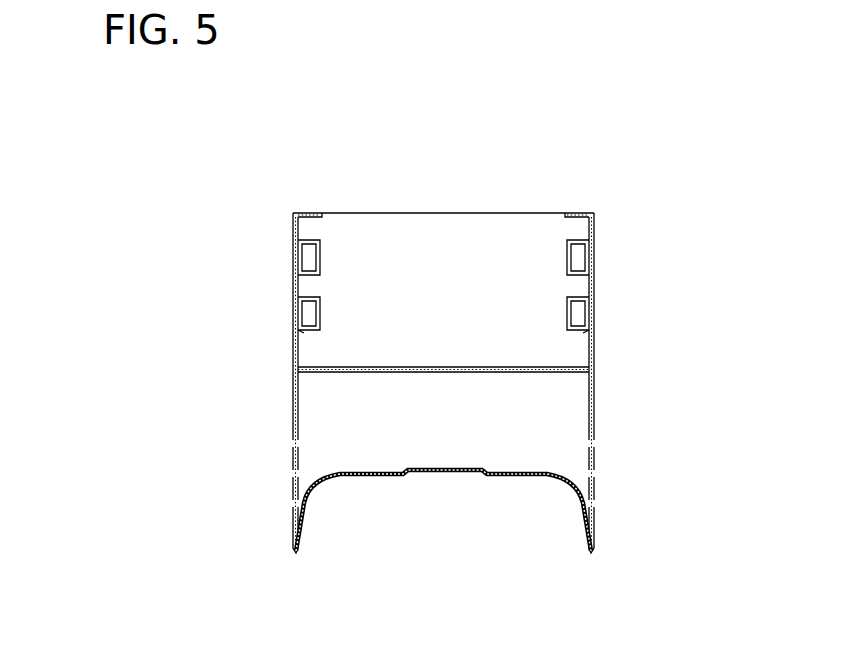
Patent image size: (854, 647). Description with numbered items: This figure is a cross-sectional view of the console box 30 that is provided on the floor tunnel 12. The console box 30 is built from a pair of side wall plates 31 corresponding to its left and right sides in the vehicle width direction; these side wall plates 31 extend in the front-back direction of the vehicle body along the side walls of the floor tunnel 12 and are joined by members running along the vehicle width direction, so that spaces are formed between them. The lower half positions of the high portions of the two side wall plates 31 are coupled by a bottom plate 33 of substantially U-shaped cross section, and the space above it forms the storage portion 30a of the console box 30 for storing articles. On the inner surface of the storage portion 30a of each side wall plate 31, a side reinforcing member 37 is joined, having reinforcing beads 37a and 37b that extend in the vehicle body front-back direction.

The console box 30 is at (460, 336).
The storage portion 30a is at (440, 237).
The side wall plate 31 is at (293, 345).
The bottom plate 33 is at (328, 370).
The side reinforcing member 37 is at (304, 333).
The reinforcing bead 37a is at (321, 252).
The reinforcing bead 37b is at (322, 313).
The floor tunnel 12 is at (457, 476).